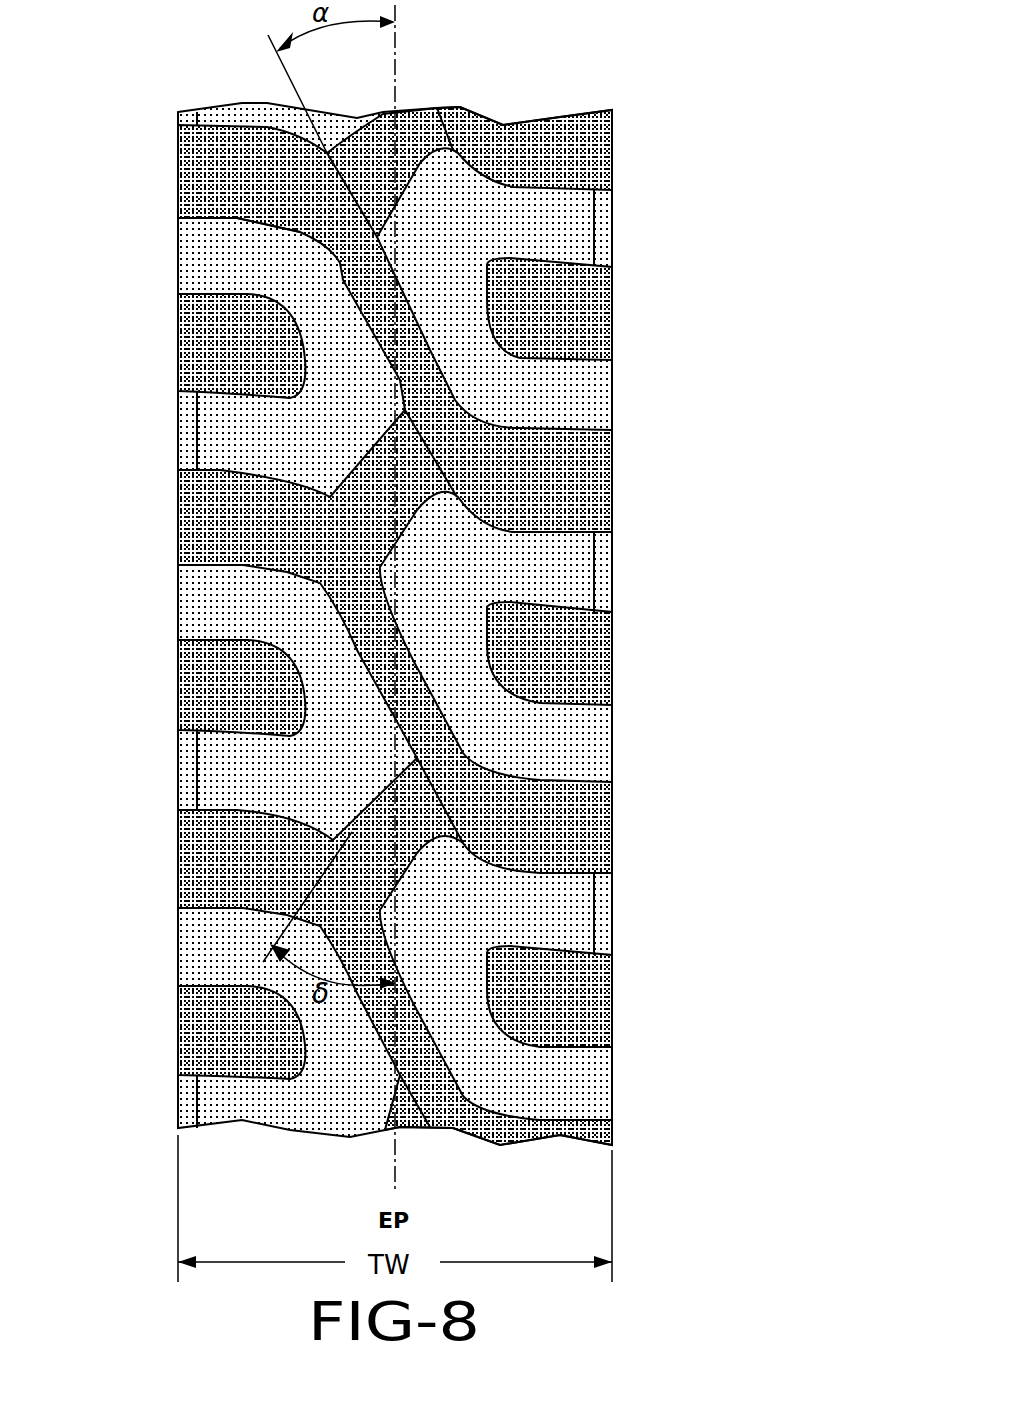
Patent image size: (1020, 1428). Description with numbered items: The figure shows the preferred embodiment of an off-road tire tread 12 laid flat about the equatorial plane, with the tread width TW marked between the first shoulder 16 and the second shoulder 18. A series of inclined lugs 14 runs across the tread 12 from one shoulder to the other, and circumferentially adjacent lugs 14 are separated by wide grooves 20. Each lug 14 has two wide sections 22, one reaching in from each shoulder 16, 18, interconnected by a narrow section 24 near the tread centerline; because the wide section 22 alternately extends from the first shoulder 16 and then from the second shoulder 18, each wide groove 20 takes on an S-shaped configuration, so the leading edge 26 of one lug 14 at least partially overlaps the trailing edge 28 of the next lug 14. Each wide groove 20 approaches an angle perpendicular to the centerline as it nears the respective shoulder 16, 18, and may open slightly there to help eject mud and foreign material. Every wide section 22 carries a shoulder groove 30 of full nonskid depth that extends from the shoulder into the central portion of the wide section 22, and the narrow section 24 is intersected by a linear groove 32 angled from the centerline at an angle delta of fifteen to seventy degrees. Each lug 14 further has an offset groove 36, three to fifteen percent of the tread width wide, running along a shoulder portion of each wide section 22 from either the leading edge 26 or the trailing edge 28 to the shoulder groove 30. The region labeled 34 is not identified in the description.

The tread 12 is at (116, 145).
The lug 14 is at (442, 235).
The first shoulder 16 is at (620, 485).
The second shoulder 18 is at (177, 515).
The wide groove 20 is at (195, 548).
The wide section 22 is at (268, 279).
The narrow section 24 is at (462, 195).
The leading edge 26 is at (237, 215).
The trailing edge 28 is at (213, 473).
The shoulder groove 30 is at (585, 320).
The linear groove 32 is at (425, 830).
The inclined groove 34 is at (407, 845).
The offset groove 36 is at (190, 426).